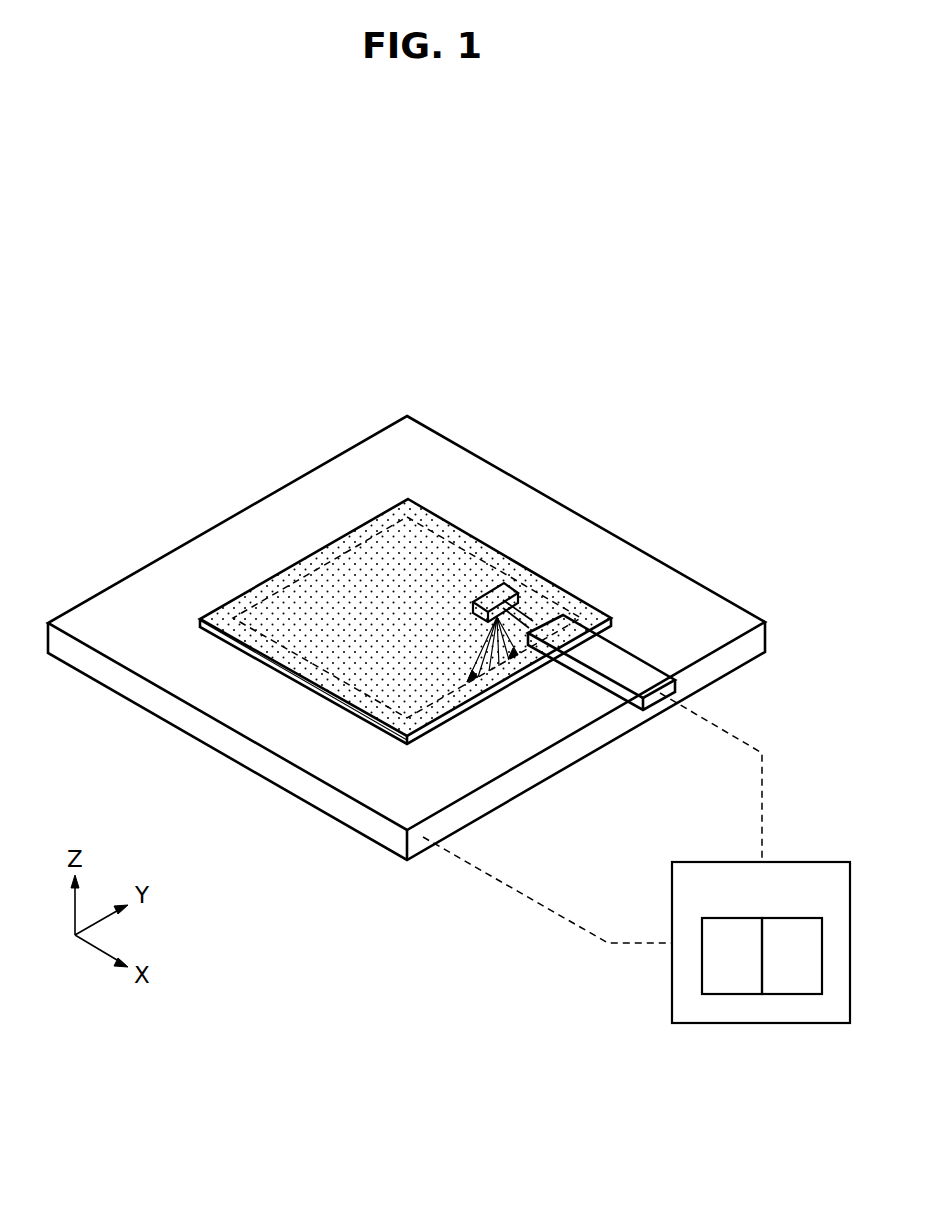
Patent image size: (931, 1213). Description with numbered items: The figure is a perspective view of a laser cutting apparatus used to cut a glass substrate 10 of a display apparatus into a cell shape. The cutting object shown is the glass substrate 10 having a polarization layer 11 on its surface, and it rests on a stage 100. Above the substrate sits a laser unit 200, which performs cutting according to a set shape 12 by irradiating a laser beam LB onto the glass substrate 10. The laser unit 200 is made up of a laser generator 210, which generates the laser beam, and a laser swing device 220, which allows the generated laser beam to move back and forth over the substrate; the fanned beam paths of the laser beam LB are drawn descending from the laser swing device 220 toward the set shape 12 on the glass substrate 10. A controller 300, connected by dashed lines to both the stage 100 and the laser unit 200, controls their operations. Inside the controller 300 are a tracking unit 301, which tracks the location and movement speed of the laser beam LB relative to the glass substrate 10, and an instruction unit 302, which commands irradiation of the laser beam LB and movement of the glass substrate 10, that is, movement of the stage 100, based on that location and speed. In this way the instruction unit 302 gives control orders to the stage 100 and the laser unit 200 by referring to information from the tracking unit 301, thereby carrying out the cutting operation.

The stage 100 is at (175, 718).
The glass substrate 10 is at (305, 683).
The polarization layer 11 is at (250, 597).
The set shape 12 is at (358, 540).
The laser unit 200 is at (540, 454).
The laser generator 210 is at (617, 658).
The laser swing device 220 is at (508, 590).
The controller 300 is at (785, 862).
The tracking unit 301 is at (732, 956).
The instruction unit 302 is at (792, 956).
The laser beam LB is at (475, 650).